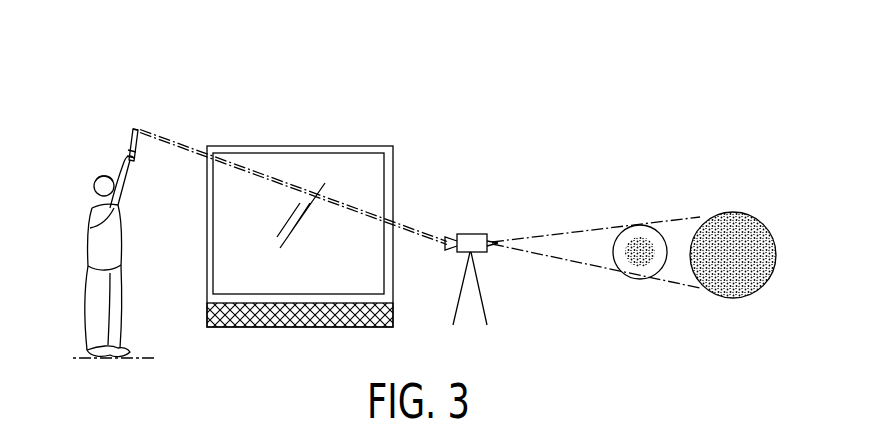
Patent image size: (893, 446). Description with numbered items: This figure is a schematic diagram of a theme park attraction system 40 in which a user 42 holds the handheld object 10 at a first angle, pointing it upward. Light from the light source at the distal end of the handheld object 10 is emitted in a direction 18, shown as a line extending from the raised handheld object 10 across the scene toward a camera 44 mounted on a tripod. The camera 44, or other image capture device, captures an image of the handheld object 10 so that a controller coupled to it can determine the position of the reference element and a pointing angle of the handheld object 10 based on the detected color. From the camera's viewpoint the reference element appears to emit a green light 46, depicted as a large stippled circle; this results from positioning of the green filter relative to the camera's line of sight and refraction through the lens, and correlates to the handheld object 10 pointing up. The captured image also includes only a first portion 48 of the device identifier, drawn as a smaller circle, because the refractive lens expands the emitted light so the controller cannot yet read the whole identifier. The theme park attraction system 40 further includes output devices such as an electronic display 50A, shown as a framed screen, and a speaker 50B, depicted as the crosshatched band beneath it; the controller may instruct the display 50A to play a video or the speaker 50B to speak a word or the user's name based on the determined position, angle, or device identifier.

The handheld object 10 is at (118, 144).
The direction 18 is at (135, 128).
The theme park attraction system 40 is at (296, 58).
The user 42 is at (95, 252).
The camera 44 is at (471, 234).
The green light 46 is at (758, 229).
The first portion 48 is at (641, 280).
The electronic display 50A is at (376, 174).
The speaker 50B is at (282, 327).